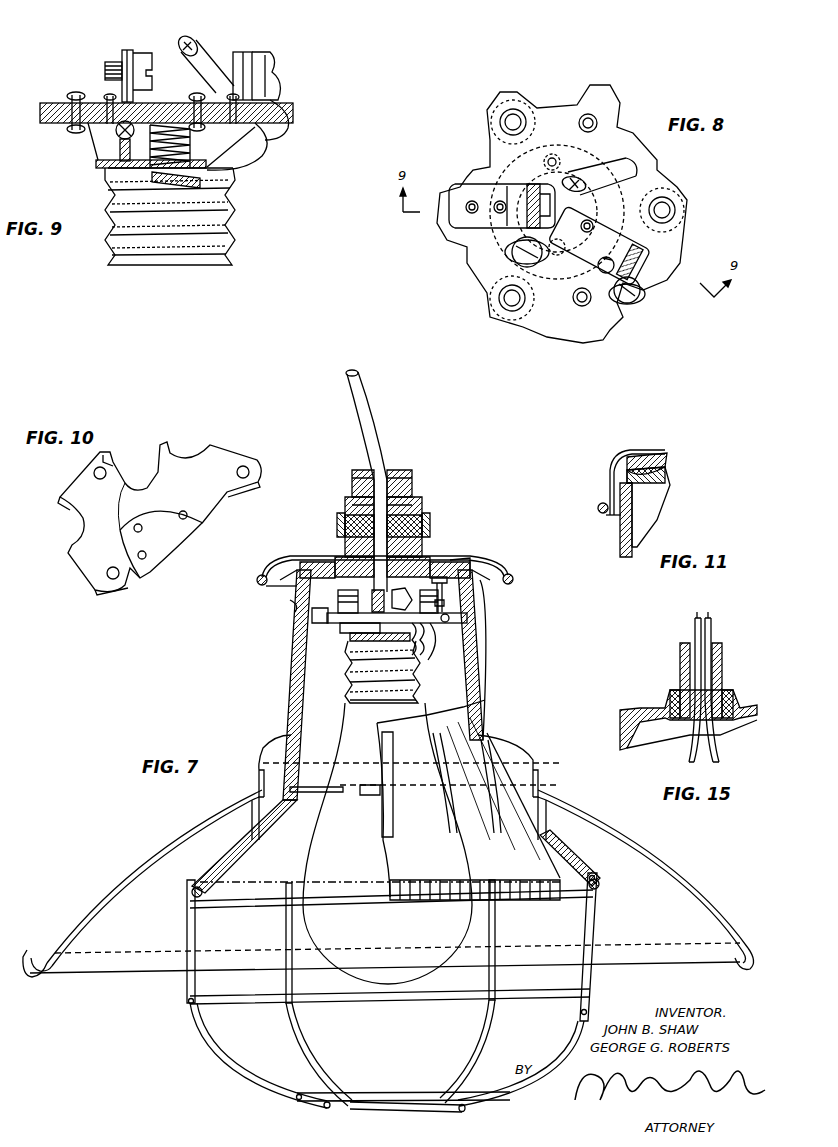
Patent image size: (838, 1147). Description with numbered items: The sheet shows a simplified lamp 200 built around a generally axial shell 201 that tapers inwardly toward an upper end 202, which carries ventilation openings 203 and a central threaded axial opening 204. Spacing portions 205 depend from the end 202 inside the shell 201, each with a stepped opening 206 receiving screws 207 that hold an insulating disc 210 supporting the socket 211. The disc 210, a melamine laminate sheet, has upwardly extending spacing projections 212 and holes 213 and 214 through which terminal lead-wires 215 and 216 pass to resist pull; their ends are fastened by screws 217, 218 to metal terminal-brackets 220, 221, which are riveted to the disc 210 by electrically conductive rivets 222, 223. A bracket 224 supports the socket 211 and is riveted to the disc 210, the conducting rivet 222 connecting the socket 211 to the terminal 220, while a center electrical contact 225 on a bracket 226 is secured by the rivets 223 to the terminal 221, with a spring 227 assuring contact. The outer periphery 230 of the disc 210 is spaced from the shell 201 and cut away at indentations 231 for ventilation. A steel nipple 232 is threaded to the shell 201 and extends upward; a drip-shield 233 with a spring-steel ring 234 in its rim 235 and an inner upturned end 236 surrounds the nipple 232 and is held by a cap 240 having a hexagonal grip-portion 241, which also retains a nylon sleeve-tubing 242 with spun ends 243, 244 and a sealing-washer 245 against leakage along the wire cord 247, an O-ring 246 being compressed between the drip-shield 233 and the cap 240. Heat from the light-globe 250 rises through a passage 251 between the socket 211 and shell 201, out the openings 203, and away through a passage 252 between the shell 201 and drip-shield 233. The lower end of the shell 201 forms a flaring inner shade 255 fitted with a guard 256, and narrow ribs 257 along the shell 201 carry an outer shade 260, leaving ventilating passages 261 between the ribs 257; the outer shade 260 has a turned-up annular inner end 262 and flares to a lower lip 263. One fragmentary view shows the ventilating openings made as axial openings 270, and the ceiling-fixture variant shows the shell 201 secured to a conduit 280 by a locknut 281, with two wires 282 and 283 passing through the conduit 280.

In FIG. 7, the lamp 200 is at (471, 537).
In FIG. 11, the shell 201 is at (618, 552).
In FIG. 15, the shell 201 is at (626, 752).
In FIG. 7, the shell 201 is at (483, 690).
In FIG. 7, the upper end 202 is at (470, 550).
In FIG. 15, the ventilation openings 203 is at (640, 710).
In FIG. 7, the ventilation openings 203 is at (303, 600).
In FIG. 7, the central threaded axial opening 204 is at (462, 541).
In FIG. 7, the spacing portions 205 is at (510, 574).
In FIG. 7, the stepped opening 206 is at (448, 596).
In FIG. 7, the screws 207 is at (450, 583).
In FIG. 9, the insulating disc 210 is at (283, 98).
In FIG. 8, the insulating disc 210 is at (660, 166).
In FIG. 7, the insulating disc 210 is at (468, 622).
In FIG. 9, the socket 211 is at (236, 226).
In FIG. 8, the socket 211 is at (632, 137).
In FIG. 7, the socket 211 is at (345, 695).
In FIG. 8, the spacing projections 212 is at (502, 112).
In FIG. 7, the spacing projections 212 is at (450, 614).
In FIG. 8, the hole 213 is at (512, 258).
In FIG. 8, the hole 214 is at (636, 160).
In FIG. 9, the terminal lead-wire 215 is at (138, 50).
In FIG. 8, the terminal lead-wire 215 is at (505, 200).
In FIG. 9, the terminal lead-wire 216 is at (218, 46).
In FIG. 8, the terminal lead-wire 216 is at (638, 298).
In FIG. 7, the terminal lead-wire 216 is at (422, 645).
In FIG. 9, the screw 217 is at (150, 52).
In FIG. 8, the screw 217 is at (545, 198).
In FIG. 7, the screw 217 is at (374, 614).
In FIG. 9, the screw 218 is at (276, 56).
In FIG. 8, the screw 218 is at (642, 255).
In FIG. 7, the screw 218 is at (436, 614).
In FIG. 9, the terminal bracket 220 is at (112, 62).
In FIG. 8, the terminal bracket 220 is at (450, 228).
In FIG. 7, the terminal bracket 220 is at (354, 587).
In FIG. 9, the terminal bracket 221 is at (246, 50).
In FIG. 8, the terminal bracket 221 is at (608, 268).
In FIG. 9, the conducting rivet 222 is at (74, 93).
In FIG. 8, the conducting rivet 222 is at (470, 200).
In FIG. 7, the conducting rivet 222 is at (312, 616).
In FIG. 9, the rivet 223 is at (195, 95).
In FIG. 8, the rivet 223 is at (605, 222).
In FIG. 9, the bracket 224 is at (96, 163).
In FIG. 8, the bracket 224 is at (543, 313).
In FIG. 10, the bracket 224 is at (121, 459).
In FIG. 7, the bracket 224 is at (350, 645).
In FIG. 9, the center electrical contact 225 is at (170, 190).
In FIG. 9, the bracket 226 is at (246, 152).
In FIG. 7, the bracket 226 is at (425, 660).
In FIG. 9, the spring 227 is at (150, 140).
In FIG. 8, the outer periphery 230 is at (560, 342).
In FIG. 7, the outer periphery 230 is at (345, 633).
In FIG. 8, the indentations 231 is at (587, 96).
In FIG. 7, the indentations 231 is at (292, 640).
In FIG. 7, the nipple 232 is at (350, 562).
In FIG. 11, the drip-shield 233 is at (640, 450).
In FIG. 7, the drip-shield 233 is at (295, 556).
In FIG. 11, the spring-steel ring 234 is at (606, 516).
In FIG. 7, the spring-steel ring 234 is at (270, 586).
In FIG. 11, the rim 235 is at (598, 505).
In FIG. 7, the rim 235 is at (275, 566).
In FIG. 7, the inner upturned end 236 is at (420, 520).
In FIG. 7, the cap 240 is at (362, 470).
In FIG. 7, the hexagonal grip-portion 241 is at (338, 515).
In FIG. 7, the sleeve-tubing 242 is at (345, 505).
In FIG. 7, the spun end 243 is at (420, 502).
In FIG. 7, the spun end 244 is at (400, 596).
In FIG. 7, the sealing-washer 245 is at (352, 480).
In FIG. 7, the O-ring 246 is at (345, 528).
In FIG. 7, the wire cord 247 is at (372, 392).
In FIG. 7, the light-globe 250 is at (387, 843).
In FIG. 7, the passage 251 is at (400, 776).
In FIG. 11, the passage 252 is at (652, 450).
In FIG. 7, the passage 252 is at (468, 560).
In FIG. 7, the inner shade 255 is at (245, 850).
In FIG. 7, the guard 256 is at (275, 1070).
In FIG. 7, the ribs 257 is at (268, 748).
In FIG. 7, the outer shade 260 is at (118, 858).
In FIG. 7, the ventilating passages 261 is at (379, 780).
In FIG. 7, the turned-up annular inner end 262 is at (381, 812).
In FIG. 7, the lower lip 263 is at (30, 960).
In FIG. 11, the axial openings 270 is at (634, 499).
In FIG. 15, the conduit 280 is at (723, 643).
In FIG. 15, the locknut 281 is at (672, 690).
In FIG. 15, the wire 282 is at (688, 750).
In FIG. 15, the wire 283 is at (722, 750).